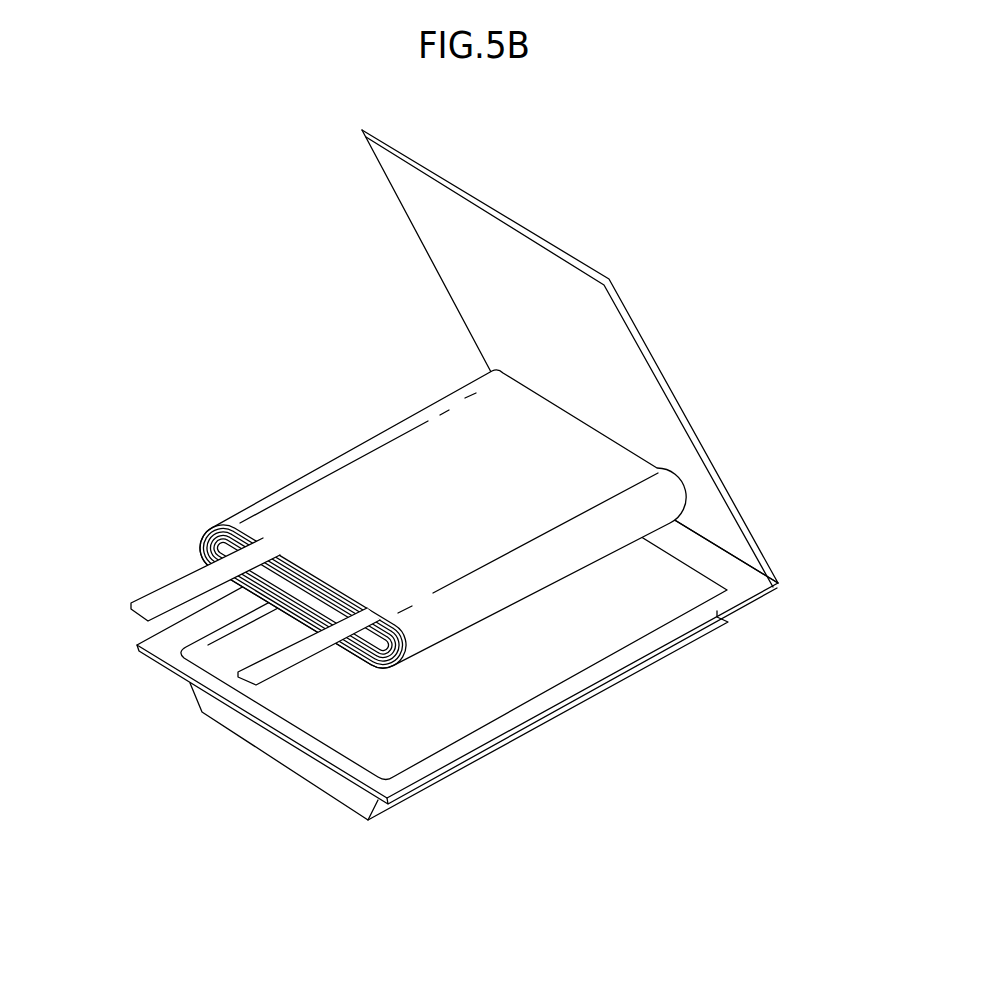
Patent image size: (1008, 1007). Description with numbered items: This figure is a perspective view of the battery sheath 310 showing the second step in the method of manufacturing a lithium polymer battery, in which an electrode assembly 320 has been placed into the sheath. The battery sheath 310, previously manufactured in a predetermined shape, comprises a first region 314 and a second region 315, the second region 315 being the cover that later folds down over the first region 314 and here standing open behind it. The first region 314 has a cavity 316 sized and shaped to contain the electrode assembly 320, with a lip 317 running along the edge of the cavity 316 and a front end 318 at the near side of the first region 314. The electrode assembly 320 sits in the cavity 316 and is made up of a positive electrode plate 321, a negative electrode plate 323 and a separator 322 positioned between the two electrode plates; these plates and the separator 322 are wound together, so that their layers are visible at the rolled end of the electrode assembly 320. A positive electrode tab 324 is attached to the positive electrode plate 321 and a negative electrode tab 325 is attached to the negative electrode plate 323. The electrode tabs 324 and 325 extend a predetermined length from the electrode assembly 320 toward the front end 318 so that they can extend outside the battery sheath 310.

The battery sheath 310 is at (474, 494).
The first region 314 is at (458, 644).
The second region 315 is at (370, 205).
The cavity 316 is at (487, 688).
The lip 317 is at (627, 657).
The front end 318 is at (290, 757).
The electrode assembly 320 is at (367, 564).
The positive electrode plate 321 is at (196, 536).
The separator 322 is at (203, 536).
The negative electrode plate 323 is at (203, 562).
The positive electrode tab 324 is at (255, 675).
The negative electrode tab 325 is at (158, 603).